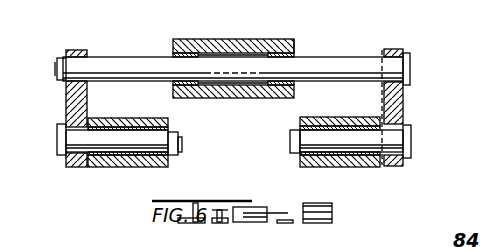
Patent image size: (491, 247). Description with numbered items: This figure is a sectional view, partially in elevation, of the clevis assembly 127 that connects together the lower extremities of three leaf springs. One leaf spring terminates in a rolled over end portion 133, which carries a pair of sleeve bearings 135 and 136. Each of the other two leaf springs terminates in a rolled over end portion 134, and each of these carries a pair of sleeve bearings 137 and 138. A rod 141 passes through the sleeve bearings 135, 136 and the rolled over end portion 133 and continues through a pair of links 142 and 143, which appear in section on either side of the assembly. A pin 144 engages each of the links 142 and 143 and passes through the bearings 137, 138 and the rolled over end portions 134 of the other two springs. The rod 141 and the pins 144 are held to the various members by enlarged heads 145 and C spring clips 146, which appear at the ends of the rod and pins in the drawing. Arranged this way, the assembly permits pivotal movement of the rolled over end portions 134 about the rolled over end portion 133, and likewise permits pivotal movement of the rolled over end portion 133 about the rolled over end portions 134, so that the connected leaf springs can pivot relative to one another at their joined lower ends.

The clevis assembly 127 is at (367, 52).
The rolled over end portion 133 is at (262, 26).
The rolled over end portion 134 is at (129, 162).
The sleeve bearing 135 is at (188, 52).
The sleeve bearing 136 is at (296, 42).
The sleeve bearing 137 is at (105, 122).
The sleeve bearing 138 is at (159, 119).
The rod 141 is at (157, 60).
The link 142 is at (72, 93).
The link 143 is at (400, 108).
The pin 144 is at (103, 142).
The enlarged head 145 is at (410, 66).
The C spring clip 146 is at (61, 58).